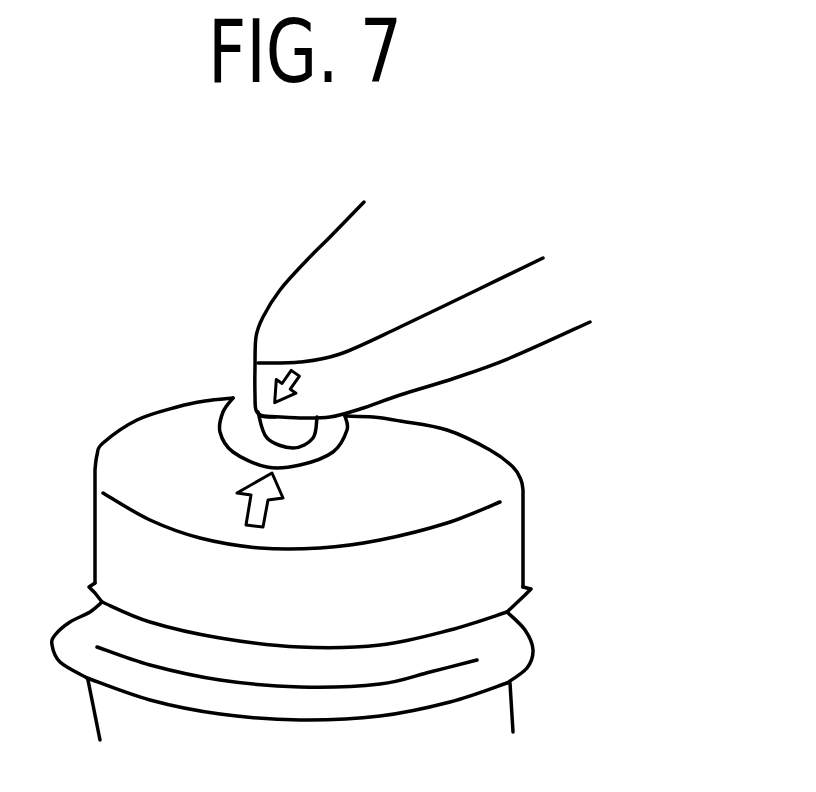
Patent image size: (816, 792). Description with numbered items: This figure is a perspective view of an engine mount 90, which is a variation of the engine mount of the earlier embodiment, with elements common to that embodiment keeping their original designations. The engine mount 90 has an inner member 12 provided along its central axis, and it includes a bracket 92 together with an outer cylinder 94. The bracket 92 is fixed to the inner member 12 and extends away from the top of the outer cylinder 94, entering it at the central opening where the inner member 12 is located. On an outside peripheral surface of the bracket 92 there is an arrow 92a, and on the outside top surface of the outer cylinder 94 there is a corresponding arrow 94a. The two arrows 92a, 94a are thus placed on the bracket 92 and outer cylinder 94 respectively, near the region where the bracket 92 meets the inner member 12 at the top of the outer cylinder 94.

The engine mount 90 is at (128, 404).
The outer cylinder 94 is at (497, 568).
The arrow 94a is at (265, 520).
The bracket 92 is at (530, 330).
The arrow 92a is at (302, 387).
The inner member 12 is at (247, 408).